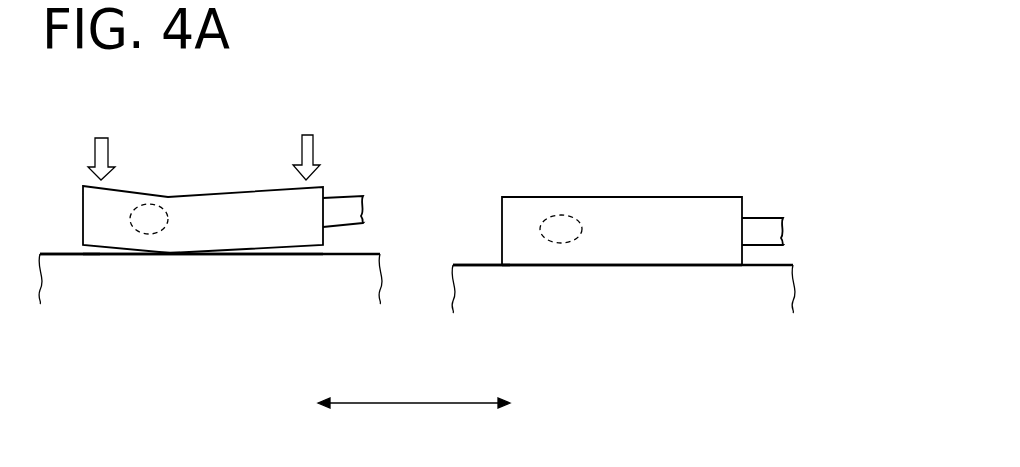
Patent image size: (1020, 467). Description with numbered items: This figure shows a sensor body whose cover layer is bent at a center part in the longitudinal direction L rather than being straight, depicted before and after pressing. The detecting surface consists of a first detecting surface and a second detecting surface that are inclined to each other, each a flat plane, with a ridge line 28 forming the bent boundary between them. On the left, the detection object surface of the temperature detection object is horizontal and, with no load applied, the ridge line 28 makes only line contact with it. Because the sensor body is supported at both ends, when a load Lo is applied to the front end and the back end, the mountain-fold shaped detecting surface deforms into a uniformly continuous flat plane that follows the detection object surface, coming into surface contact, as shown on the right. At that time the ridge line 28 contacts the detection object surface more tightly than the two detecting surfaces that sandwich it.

The ridge line 28 is at (178, 256).
The load Lo is at (204, 139).
The longitudinal direction L is at (413, 405).